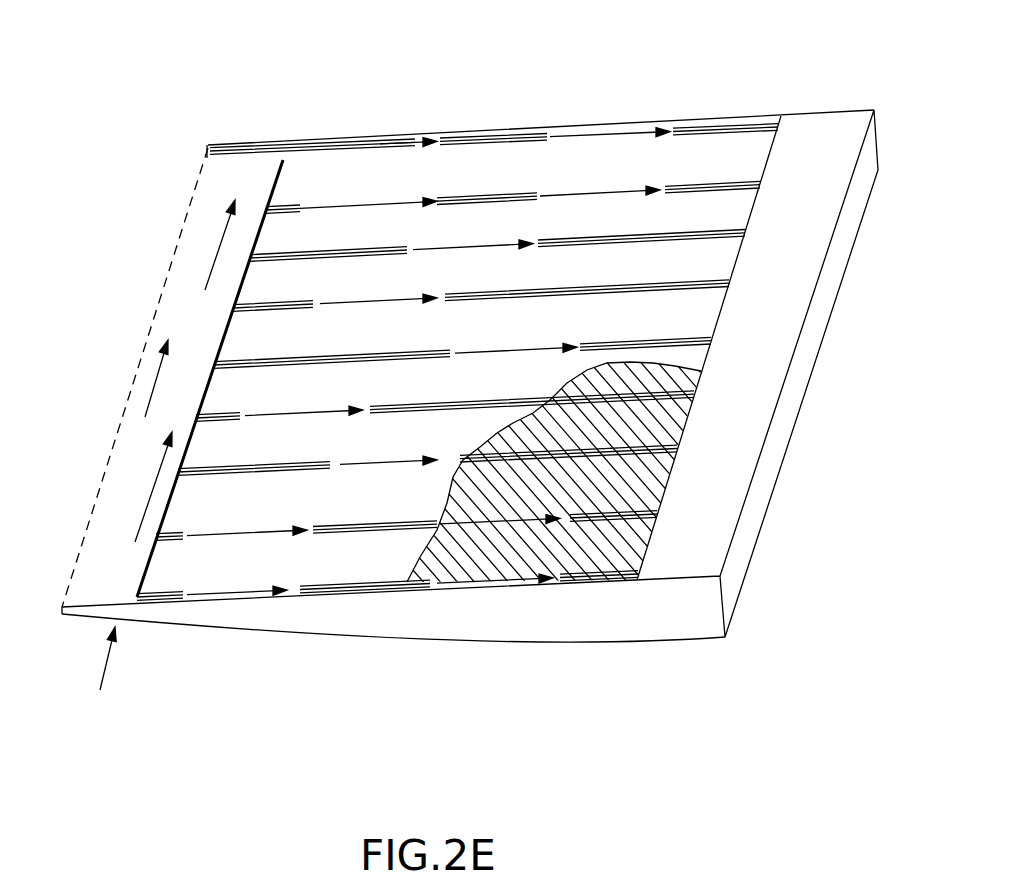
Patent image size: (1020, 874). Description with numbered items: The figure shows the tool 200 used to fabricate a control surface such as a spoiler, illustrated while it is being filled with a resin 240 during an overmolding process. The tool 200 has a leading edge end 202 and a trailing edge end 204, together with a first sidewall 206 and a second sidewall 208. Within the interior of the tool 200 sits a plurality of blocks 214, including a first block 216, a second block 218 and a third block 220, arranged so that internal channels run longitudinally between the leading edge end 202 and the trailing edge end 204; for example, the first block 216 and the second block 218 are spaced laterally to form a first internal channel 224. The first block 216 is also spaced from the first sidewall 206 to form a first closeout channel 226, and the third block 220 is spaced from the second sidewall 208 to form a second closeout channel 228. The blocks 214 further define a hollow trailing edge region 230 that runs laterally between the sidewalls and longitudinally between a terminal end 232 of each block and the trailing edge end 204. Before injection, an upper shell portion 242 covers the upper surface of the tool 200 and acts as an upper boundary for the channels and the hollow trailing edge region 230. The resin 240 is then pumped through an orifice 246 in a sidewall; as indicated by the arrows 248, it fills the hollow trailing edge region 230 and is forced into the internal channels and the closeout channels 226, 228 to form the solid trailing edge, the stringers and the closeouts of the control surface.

The tool 200 is at (487, 347).
The leading edge end 202 is at (822, 248).
The trailing edge end 204 is at (183, 222).
The first sidewall 206 is at (393, 651).
The second sidewall 208 is at (494, 132).
The plurality of blocks 214 is at (566, 482).
The first block 216 is at (618, 550).
The second block 218 is at (566, 482).
The third block 220 is at (748, 147).
The first internal channel 224 is at (375, 533).
The first closeout channel 226 is at (220, 585).
The second closeout channel 228 is at (429, 162).
The hollow trailing edge region 230 is at (143, 432).
The terminal end 232 is at (272, 172).
The resin 240 is at (100, 690).
The upper shell portion 242 is at (566, 482).
The orifice 246 is at (115, 613).
The arrows 248 is at (413, 384).